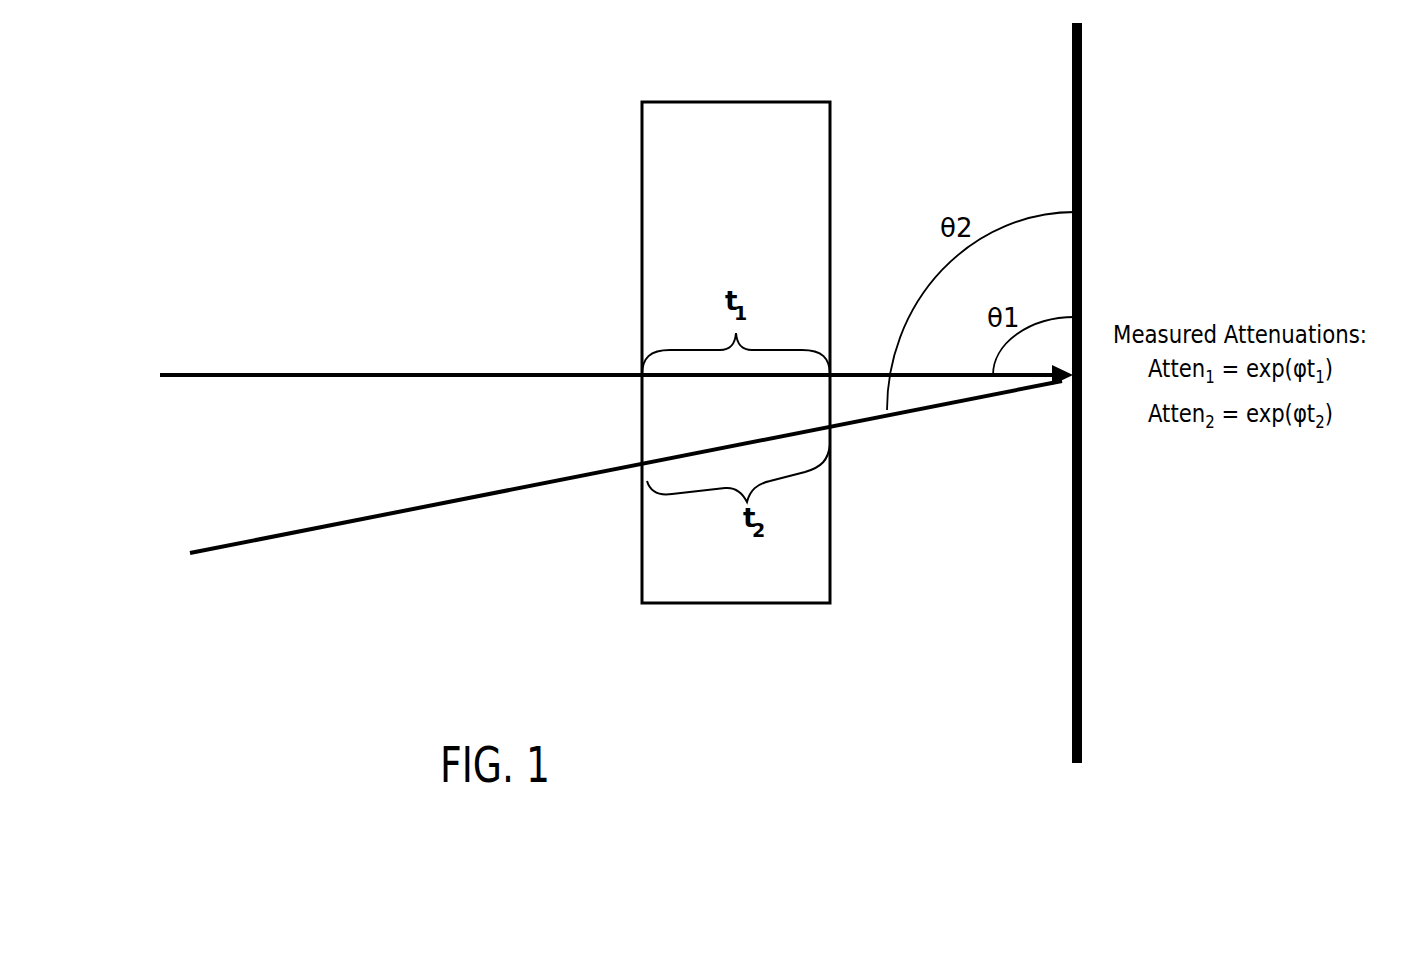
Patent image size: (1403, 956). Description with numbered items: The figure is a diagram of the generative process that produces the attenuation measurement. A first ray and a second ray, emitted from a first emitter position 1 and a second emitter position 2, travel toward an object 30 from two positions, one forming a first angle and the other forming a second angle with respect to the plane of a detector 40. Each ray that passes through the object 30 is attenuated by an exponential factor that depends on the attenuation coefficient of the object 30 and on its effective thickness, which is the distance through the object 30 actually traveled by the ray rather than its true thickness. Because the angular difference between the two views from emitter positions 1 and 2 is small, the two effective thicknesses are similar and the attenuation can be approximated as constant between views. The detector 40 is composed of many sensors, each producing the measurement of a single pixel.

The object 30 is at (831, 125).
The detector 40 is at (1082, 718).
The emitter 1 is at (583, 358).
The emitter 2 is at (604, 467).